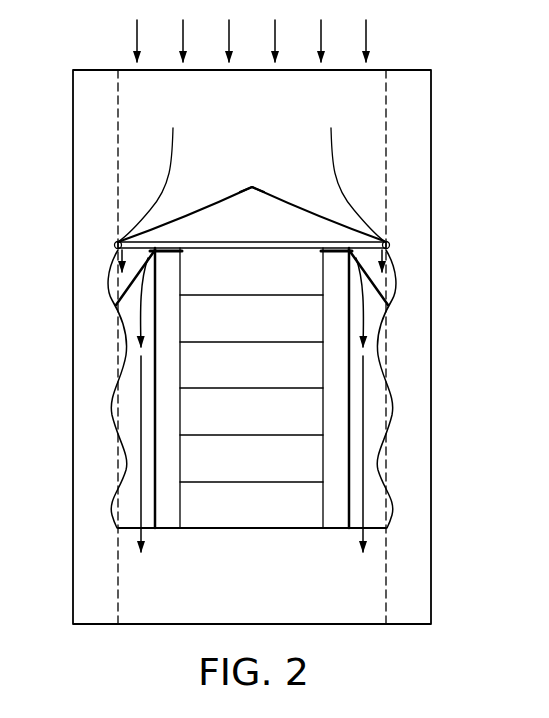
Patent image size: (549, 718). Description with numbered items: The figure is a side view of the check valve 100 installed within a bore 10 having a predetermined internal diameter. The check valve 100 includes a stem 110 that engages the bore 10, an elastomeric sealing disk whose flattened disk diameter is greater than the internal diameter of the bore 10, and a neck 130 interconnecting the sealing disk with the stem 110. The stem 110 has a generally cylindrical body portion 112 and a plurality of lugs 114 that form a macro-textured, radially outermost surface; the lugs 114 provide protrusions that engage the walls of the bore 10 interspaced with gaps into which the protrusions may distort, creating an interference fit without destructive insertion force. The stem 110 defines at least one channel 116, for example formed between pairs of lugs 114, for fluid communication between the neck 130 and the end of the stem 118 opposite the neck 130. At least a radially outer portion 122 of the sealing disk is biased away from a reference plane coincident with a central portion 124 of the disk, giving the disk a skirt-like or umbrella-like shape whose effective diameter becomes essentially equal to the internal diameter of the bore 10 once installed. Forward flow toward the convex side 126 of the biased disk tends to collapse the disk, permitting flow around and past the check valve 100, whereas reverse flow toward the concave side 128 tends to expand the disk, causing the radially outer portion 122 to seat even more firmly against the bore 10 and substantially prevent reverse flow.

The bore 10 is at (410, 70).
The check valve 100 is at (225, 192).
The stem 110 is at (375, 513).
The generally cylindrical body portion 112 is at (150, 442).
The lugs 114 is at (373, 363).
The channel 116 is at (337, 520).
The end of the stem 118 is at (165, 522).
The radially outer portion 122 is at (392, 246).
The central portion 124 is at (252, 187).
The convex side 126 is at (192, 232).
The concave side 128 is at (115, 247).
The neck 130 is at (147, 256).